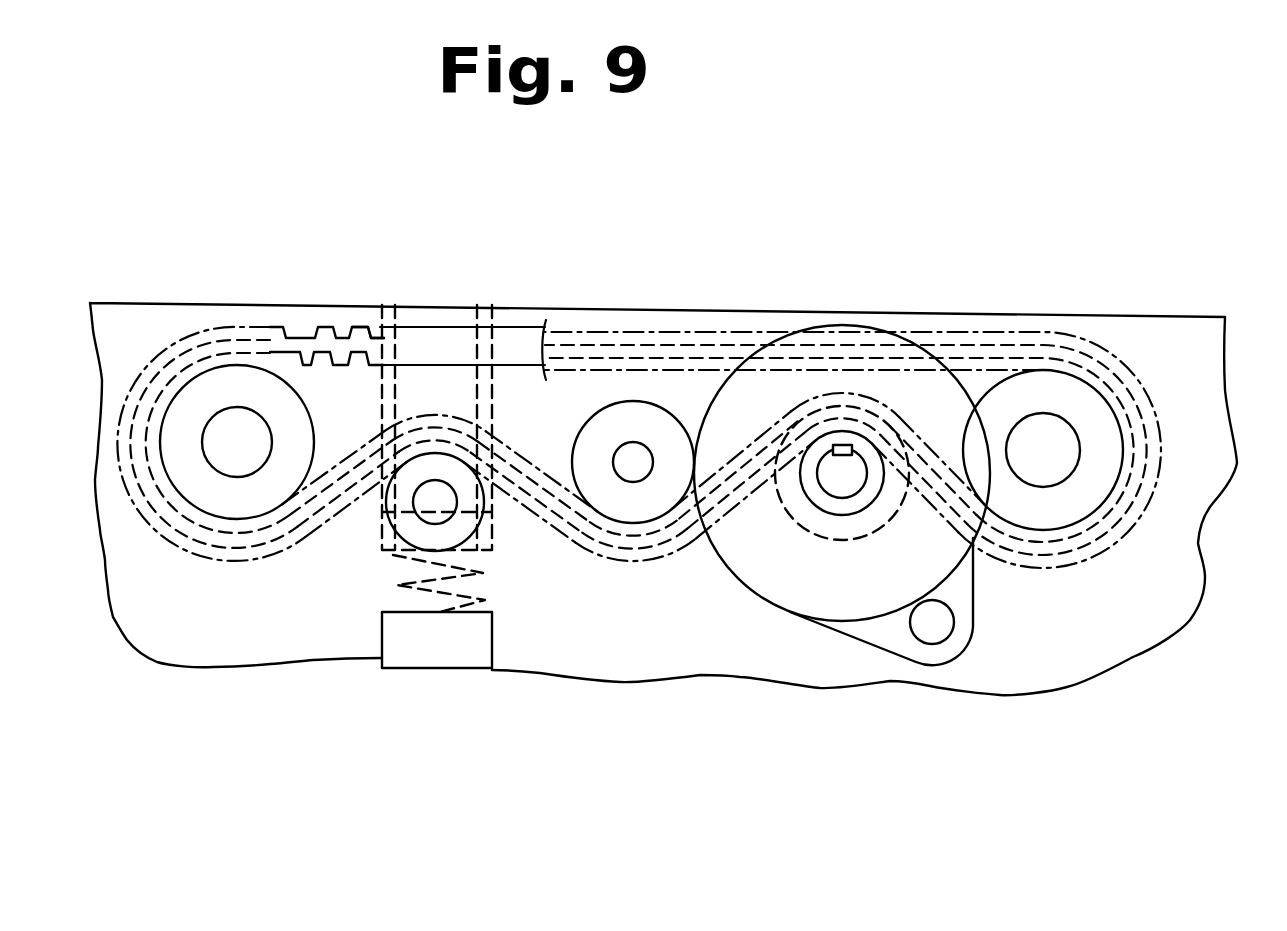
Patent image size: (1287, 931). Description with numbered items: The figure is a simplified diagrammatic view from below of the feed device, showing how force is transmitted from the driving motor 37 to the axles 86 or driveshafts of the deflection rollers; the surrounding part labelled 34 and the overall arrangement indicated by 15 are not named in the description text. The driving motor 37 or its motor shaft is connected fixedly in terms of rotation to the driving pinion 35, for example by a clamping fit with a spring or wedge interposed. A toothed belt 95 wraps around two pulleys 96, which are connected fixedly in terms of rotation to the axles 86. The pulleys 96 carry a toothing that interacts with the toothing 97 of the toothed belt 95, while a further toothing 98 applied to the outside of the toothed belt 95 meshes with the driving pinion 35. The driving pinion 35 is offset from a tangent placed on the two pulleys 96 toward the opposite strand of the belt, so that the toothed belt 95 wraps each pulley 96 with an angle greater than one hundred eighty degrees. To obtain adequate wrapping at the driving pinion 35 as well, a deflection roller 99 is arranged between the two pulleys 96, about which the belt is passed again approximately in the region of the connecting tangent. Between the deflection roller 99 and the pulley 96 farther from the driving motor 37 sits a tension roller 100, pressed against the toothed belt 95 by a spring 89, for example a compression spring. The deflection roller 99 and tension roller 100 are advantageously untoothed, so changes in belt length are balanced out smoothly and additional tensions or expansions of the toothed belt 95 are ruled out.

The belt drive 15 is at (248, 216).
The housing 34 is at (118, 312).
The driving pinion 35 is at (818, 493).
The driving motor 37 is at (848, 597).
The axles 86 is at (244, 420).
The spring 89 is at (427, 593).
The toothed belt 95 is at (277, 350).
The pulleys 96 is at (178, 395).
The toothing of the toothed belt 97 is at (340, 340).
The toothing 98 is at (303, 330).
The deflection roller 99 is at (625, 507).
The tension roller 100 is at (407, 525).